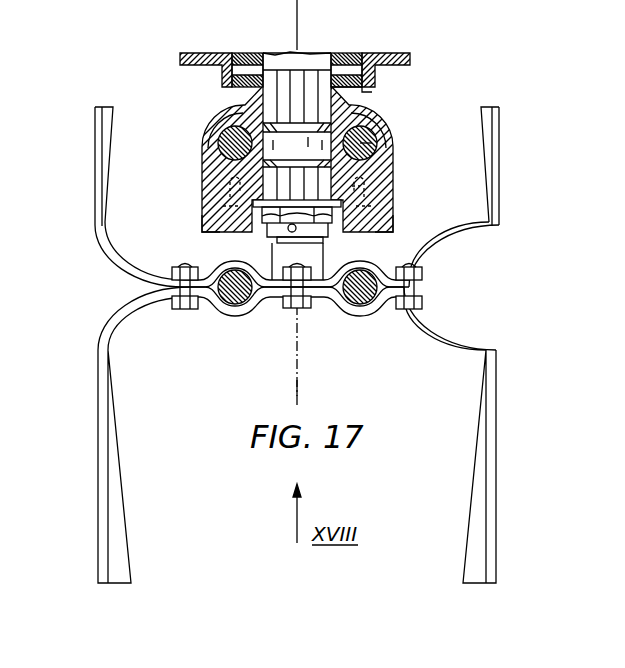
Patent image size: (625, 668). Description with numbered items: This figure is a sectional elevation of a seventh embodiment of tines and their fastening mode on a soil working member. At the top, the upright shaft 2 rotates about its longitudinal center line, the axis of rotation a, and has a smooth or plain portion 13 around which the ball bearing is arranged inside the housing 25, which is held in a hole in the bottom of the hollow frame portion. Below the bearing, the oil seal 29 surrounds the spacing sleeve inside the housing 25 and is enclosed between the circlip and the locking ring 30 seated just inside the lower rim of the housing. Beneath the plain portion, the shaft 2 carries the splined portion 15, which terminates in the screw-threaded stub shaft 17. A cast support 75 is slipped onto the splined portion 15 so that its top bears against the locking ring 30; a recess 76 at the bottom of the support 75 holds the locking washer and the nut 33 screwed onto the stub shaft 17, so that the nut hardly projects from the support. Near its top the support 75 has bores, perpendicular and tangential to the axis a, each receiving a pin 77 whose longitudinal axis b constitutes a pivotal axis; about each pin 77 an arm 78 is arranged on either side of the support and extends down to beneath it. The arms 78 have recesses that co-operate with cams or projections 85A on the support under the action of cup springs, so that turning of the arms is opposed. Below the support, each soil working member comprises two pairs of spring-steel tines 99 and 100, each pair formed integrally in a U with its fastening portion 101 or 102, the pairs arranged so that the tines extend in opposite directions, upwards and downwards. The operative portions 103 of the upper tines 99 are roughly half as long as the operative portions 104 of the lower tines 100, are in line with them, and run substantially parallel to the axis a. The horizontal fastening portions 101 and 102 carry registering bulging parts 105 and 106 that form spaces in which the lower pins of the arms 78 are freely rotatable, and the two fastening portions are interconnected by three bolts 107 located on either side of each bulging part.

The upright shaft 2 is at (280, 50).
The smooth or plain portion 13 is at (311, 57).
The splined portion 15 is at (258, 56).
The screw-threaded stub shaft 17 is at (304, 250).
The housing 25 is at (210, 53).
The oil seal 29 is at (360, 52).
The locking ring 30 is at (368, 90).
The nut 33 is at (268, 236).
The support 75 is at (389, 135).
The recess 76 is at (345, 238).
The pin 77 is at (222, 143).
The arm 78 is at (200, 224).
The cams or projections 85A is at (228, 205).
The tines of the upper pair 99 is at (91, 127).
The tines of the lower pair 100 is at (92, 372).
The fastening portion 101 is at (278, 291).
The fastening portion 102 is at (317, 298).
The operative portions 103 is at (95, 222).
The operative portions 104 is at (102, 528).
The bulging part 105 is at (213, 268).
The bulging part 106 is at (240, 318).
The bolts 107 is at (185, 312).
The axis of rotation a is at (303, 389).
The pivotal axis b is at (374, 143).